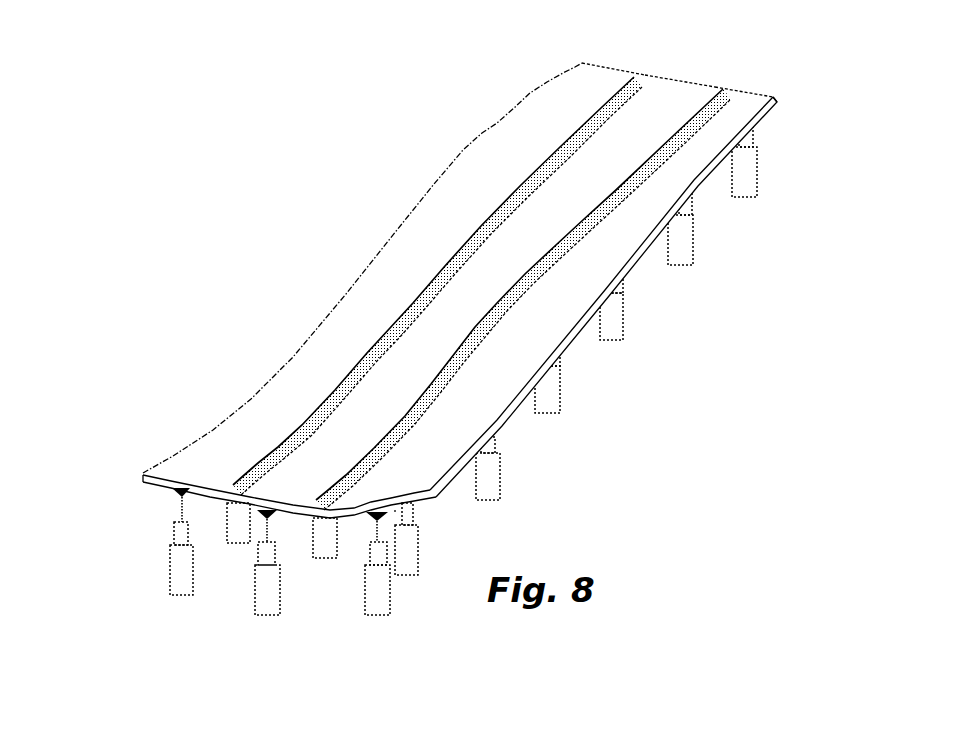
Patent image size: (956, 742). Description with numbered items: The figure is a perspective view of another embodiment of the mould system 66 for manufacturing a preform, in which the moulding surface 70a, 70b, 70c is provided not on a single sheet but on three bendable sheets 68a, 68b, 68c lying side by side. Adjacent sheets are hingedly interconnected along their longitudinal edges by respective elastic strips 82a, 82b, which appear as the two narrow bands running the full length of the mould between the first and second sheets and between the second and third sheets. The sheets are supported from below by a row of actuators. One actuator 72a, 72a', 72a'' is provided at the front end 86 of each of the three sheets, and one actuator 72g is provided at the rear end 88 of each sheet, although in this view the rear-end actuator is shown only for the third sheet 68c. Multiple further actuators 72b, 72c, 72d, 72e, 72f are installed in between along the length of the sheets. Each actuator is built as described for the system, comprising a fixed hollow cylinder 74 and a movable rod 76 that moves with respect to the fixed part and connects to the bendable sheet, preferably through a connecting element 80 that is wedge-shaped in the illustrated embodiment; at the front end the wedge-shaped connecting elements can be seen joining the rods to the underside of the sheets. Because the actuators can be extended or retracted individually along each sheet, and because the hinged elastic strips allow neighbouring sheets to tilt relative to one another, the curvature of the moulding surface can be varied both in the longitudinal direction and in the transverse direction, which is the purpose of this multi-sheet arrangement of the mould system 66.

The mould system 66 is at (371, 171).
The bendable sheet 68a is at (599, 80).
The bendable sheet 68b is at (675, 103).
The bendable sheet 68c is at (733, 106).
The moulding surface 70a is at (407, 300).
The moulding surface 70b is at (484, 320).
The moulding surface 70c is at (548, 348).
The actuator 72a is at (344, 579).
The actuator 72a' is at (233, 577).
The actuator 72a'' is at (126, 559).
The actuator 72b is at (413, 552).
The actuator 72c is at (490, 482).
The actuator 72d is at (552, 388).
The actuator 72e is at (620, 323).
The actuator 72f is at (690, 245).
The actuator 72g is at (752, 168).
The fixed hollow cylinder 74 is at (183, 580).
The movable rod 76 is at (182, 500).
The connecting element 80 is at (182, 492).
The elastic strip 82a is at (365, 365).
The elastic strip 82b is at (408, 425).
The front end 86 is at (396, 512).
The rear end 88 is at (763, 91).